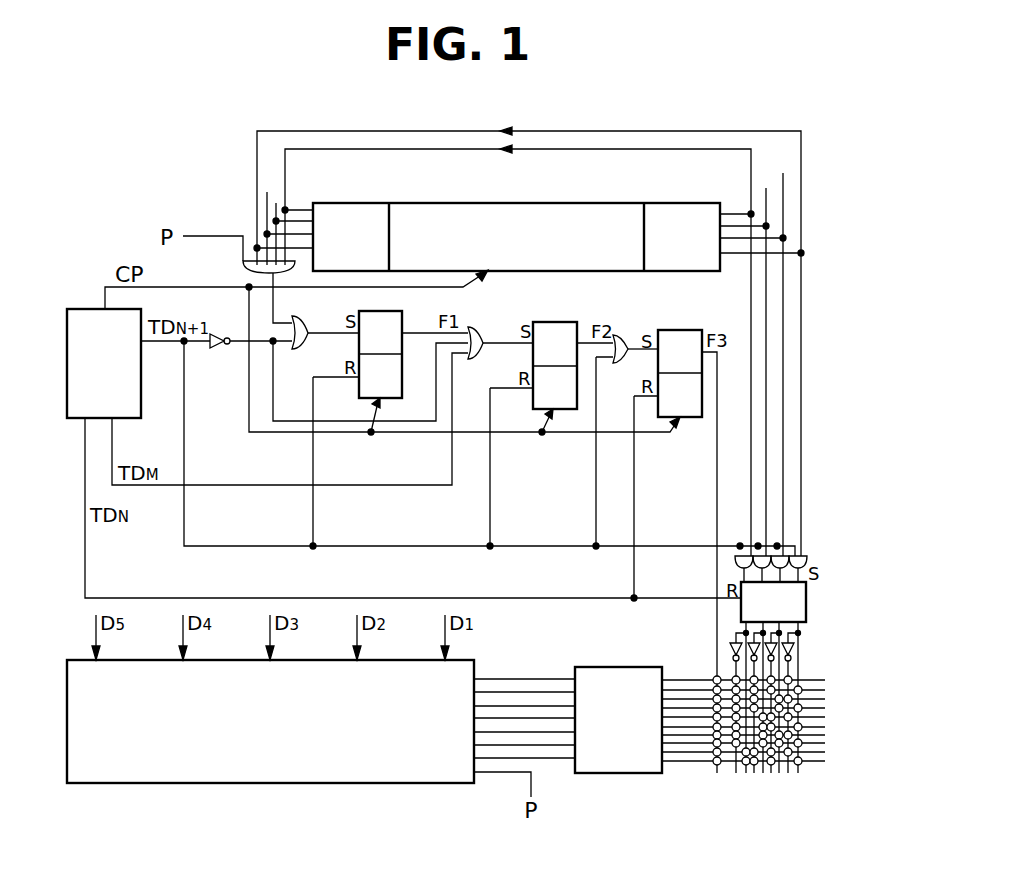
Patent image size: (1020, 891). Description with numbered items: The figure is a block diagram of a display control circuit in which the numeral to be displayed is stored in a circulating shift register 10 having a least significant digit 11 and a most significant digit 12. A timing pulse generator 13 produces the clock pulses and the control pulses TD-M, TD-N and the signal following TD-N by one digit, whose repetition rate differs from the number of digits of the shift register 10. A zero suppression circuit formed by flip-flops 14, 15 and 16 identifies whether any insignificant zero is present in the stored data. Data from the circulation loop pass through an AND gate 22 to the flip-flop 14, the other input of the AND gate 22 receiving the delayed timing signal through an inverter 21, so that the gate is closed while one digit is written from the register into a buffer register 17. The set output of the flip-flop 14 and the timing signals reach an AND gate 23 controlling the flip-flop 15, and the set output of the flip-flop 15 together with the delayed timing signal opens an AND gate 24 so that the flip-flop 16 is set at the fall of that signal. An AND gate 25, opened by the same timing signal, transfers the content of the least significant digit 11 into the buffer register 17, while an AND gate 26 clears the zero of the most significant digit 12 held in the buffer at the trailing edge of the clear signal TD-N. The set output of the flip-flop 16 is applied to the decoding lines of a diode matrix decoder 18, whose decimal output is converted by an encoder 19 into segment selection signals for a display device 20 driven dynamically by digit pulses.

The circulating shift register 10 is at (577, 210).
The least significant digit 11 is at (675, 210).
The most significant digit 12 is at (347, 204).
The timing pulse generator 13 is at (87, 310).
The flip-flop 14 is at (404, 317).
The flip-flop 15 is at (555, 322).
The flip-flop 16 is at (681, 330).
The buffer register 17 is at (806, 612).
The diode matrix decoder 18 is at (832, 727).
The encoder 19 is at (617, 667).
The display device 20 is at (474, 660).
The inverter 21 is at (217, 345).
The AND gate 22 is at (298, 318).
The AND gate 23 is at (484, 328).
The AND gate 24 is at (622, 335).
The AND gate 25 is at (806, 554).
The AND gate 26 is at (243, 266).